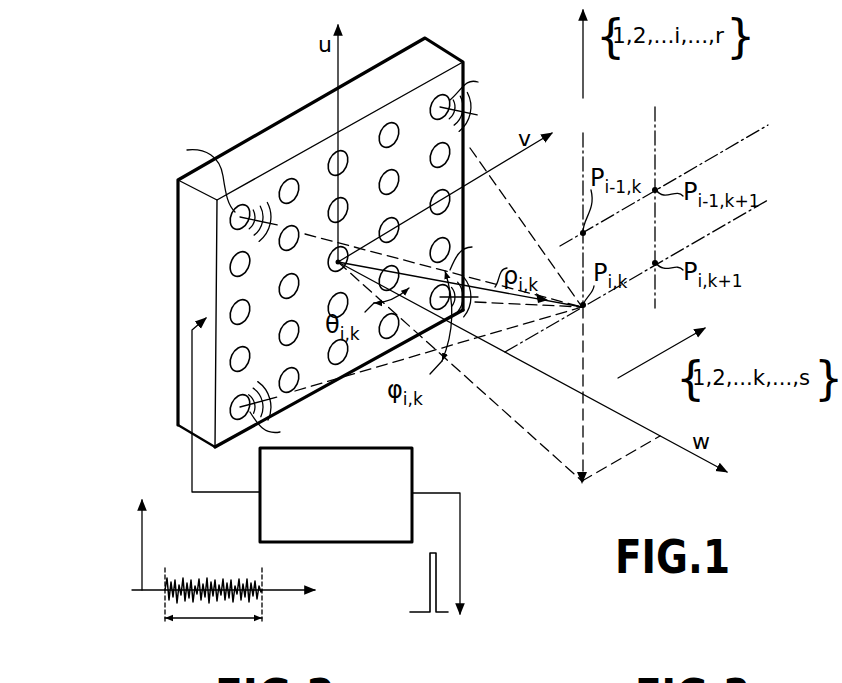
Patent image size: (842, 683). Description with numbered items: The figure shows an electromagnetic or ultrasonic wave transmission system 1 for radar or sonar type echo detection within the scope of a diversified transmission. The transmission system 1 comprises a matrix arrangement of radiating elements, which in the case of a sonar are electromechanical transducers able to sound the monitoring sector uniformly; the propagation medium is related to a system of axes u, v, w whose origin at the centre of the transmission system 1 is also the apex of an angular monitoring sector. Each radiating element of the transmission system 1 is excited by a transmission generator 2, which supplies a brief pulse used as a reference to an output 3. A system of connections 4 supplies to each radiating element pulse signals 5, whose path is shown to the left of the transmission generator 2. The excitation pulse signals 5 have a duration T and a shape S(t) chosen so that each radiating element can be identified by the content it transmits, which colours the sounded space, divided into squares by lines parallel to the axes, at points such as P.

The transmission system 1 is at (263, 128).
The transmission generator 2 is at (412, 470).
The output 3 is at (462, 580).
The system of connections 4 is at (226, 492).
The pulse signals 5 is at (188, 577).